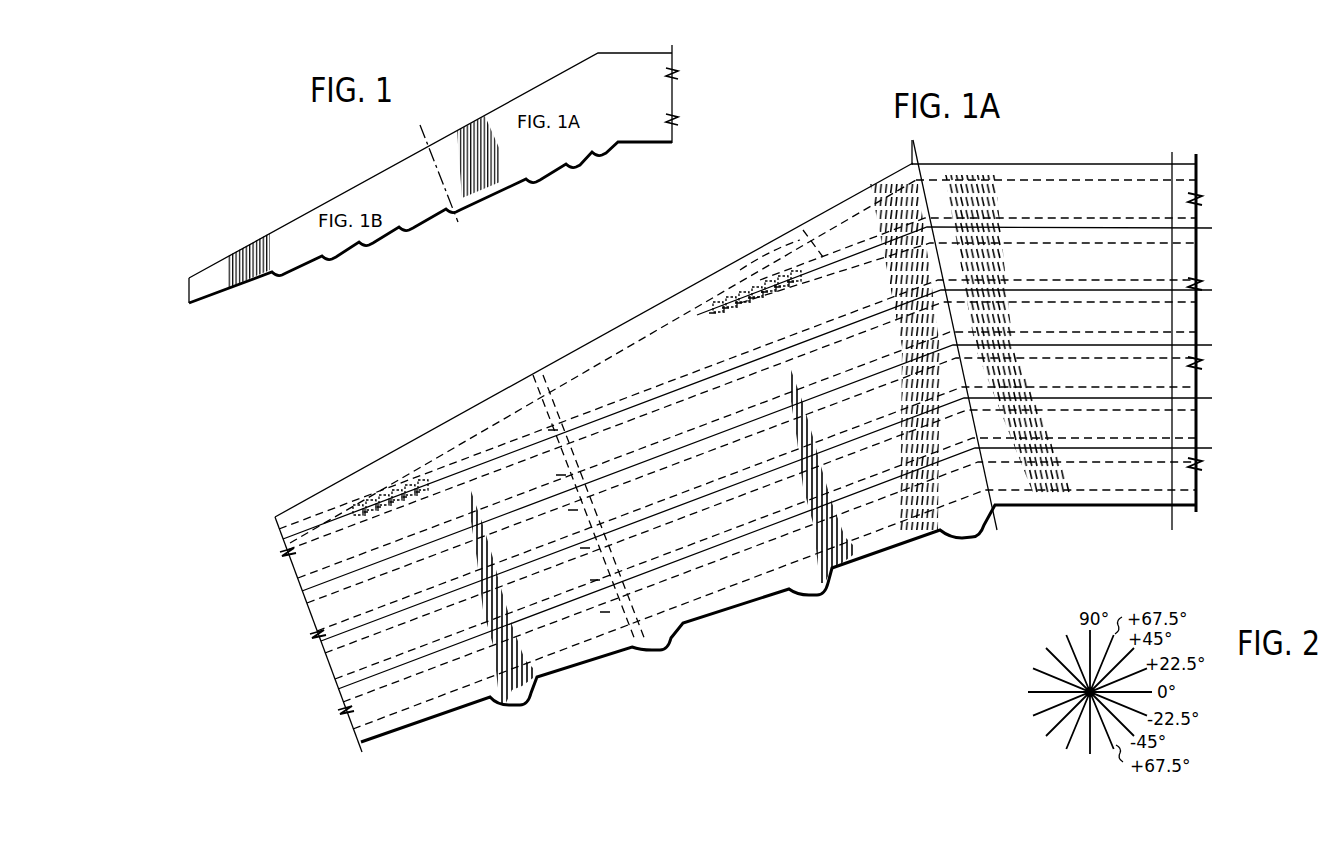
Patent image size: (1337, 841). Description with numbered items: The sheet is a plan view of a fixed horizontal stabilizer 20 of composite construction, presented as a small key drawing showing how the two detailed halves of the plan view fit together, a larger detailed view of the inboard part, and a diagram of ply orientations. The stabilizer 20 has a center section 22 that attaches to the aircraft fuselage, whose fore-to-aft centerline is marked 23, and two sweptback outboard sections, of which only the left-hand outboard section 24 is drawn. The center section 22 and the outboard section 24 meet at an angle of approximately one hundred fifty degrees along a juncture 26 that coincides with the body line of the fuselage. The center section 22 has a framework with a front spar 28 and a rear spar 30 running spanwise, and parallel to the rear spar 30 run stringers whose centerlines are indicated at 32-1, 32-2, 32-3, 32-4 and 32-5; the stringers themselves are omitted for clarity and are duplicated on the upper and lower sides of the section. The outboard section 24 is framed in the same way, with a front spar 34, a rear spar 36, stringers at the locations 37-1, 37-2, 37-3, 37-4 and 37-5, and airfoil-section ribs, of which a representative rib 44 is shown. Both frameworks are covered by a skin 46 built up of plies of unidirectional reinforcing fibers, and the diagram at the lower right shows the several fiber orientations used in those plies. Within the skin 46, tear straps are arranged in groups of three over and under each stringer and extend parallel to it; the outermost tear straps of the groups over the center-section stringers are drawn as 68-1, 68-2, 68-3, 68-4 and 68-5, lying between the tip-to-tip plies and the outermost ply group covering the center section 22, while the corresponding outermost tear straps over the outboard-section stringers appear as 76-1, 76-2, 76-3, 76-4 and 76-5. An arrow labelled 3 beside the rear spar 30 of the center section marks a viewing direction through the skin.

The horizontal stabilizer 20 is at (350, 434).
The center section 22 is at (1106, 152).
The fore-to-aft centerline of the fuselage 23 is at (1172, 520).
The left-hand outboard section 24 is at (354, 467).
The juncture 26 is at (912, 152).
The front spar 28 is at (1140, 180).
The rear spar 30 is at (1158, 490).
The stringer centerline 32-1 is at (1208, 232).
The stringer centerline 32-2 is at (1208, 292).
The stringer centerline 32-3 is at (1208, 345).
The stringer centerline 32-4 is at (1208, 398).
The stringer centerline 32-5 is at (1185, 448).
The front spar 34 is at (788, 259).
The rear spar 36 is at (710, 585).
The stringer 37-1 is at (697, 315).
The stringer 37-2 is at (490, 458).
The stringer 37-3 is at (317, 584).
The stringer 37-4 is at (330, 634).
The stringer 37-5 is at (350, 684).
The airfoil section rib 44 is at (537, 414).
The skin 46 is at (997, 205).
The tear strap 68-1 is at (1112, 218).
The tear strap 68-2 is at (1125, 280).
The tear strap 68-3 is at (1140, 332).
The tear strap 68-4 is at (1143, 387).
The tear strap 68-5 is at (1157, 437).
The tear strap 76-1 is at (803, 230).
The tear strap 76-2 is at (598, 403).
The tear strap 76-3 is at (338, 570).
The tear strap 76-4 is at (348, 622).
The tear strap 76-5 is at (372, 672).
The section line 3 is at (1240, 426).